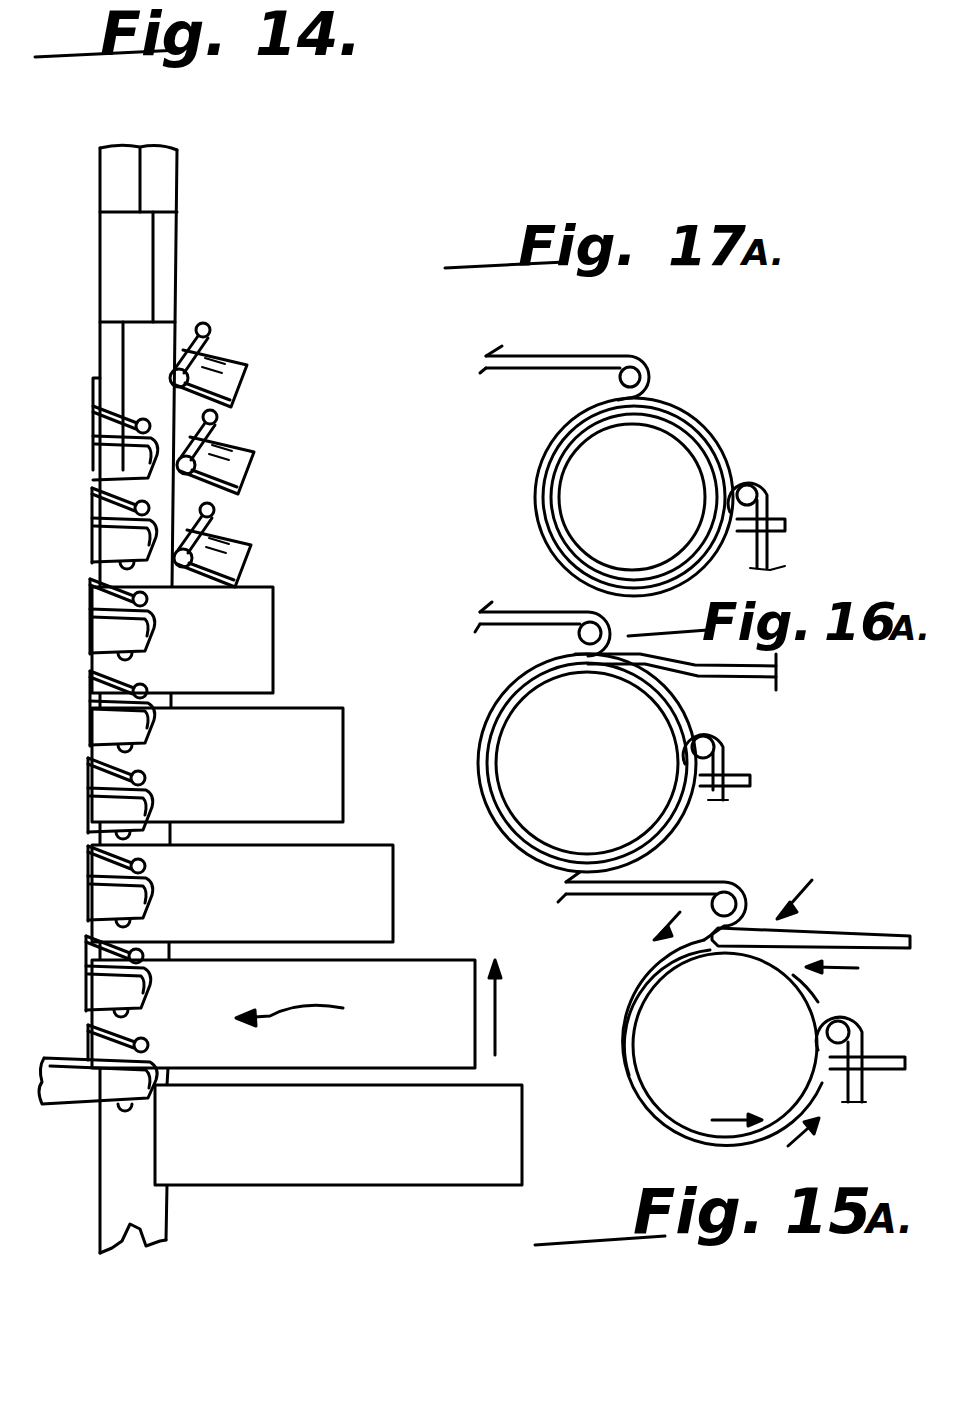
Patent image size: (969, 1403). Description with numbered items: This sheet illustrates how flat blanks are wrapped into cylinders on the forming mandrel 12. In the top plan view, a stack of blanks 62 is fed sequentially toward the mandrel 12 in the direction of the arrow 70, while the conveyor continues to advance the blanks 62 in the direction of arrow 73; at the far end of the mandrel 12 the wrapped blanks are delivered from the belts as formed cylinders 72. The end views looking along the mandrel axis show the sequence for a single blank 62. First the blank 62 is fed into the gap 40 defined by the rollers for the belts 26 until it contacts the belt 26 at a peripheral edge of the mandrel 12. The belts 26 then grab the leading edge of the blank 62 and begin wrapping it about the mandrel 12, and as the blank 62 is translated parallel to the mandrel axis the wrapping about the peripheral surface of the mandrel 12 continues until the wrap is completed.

In FIG. 14, the mandrel 12 is at (106, 1155).
In FIG. 17A, the mandrel 12 is at (590, 521).
In FIG. 16A, the mandrel 12 is at (652, 832).
In FIG. 15A, the mandrel 12 is at (662, 1118).
In FIG. 14, the belt 26 is at (60, 1072).
In FIG. 17A, the belt 26 is at (550, 432).
In FIG. 16A, the belt 26 is at (506, 682).
In FIG. 15A, the belt 26 is at (645, 972).
In FIG. 15A, the gap 40 is at (816, 891).
In FIG. 14, the blank 62 is at (316, 712).
In FIG. 17A, the blank 62 is at (682, 420).
In FIG. 16A, the blank 62 is at (692, 668).
In FIG. 15A, the blank 62 is at (834, 938).
In FIG. 14, the arrow 70 is at (289, 1001).
In FIG. 15A, the arrow 70 is at (860, 968).
In FIG. 14, the formed cylinder 72 is at (104, 353).
In FIG. 14, the arrow 73 is at (500, 1022).